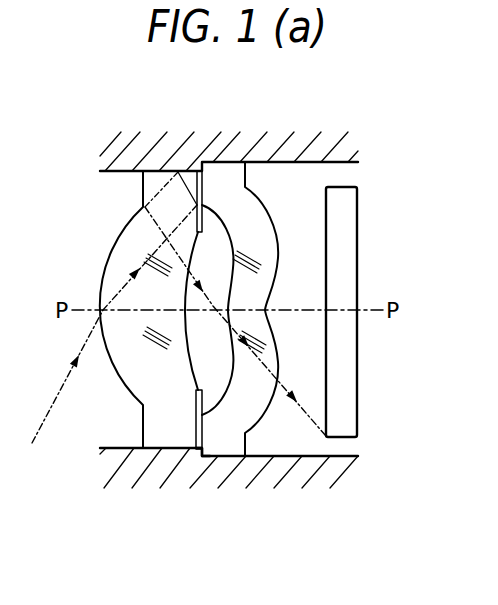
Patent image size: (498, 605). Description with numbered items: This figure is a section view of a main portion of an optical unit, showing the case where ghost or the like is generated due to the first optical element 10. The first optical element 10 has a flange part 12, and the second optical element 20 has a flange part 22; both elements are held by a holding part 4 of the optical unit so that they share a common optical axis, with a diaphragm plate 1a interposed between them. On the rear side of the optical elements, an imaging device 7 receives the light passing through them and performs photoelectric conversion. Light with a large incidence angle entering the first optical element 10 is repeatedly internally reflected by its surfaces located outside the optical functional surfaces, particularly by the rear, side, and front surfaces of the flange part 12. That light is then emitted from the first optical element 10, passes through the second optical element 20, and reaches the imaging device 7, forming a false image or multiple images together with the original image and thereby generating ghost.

The holding part 4 is at (302, 466).
The diaphragm plate 1a is at (197, 442).
The first optical element 10 is at (158, 435).
The flange part 12 is at (168, 181).
The flange part 22 is at (218, 178).
The second optical element 20 is at (229, 443).
The imaging device 7 is at (341, 425).